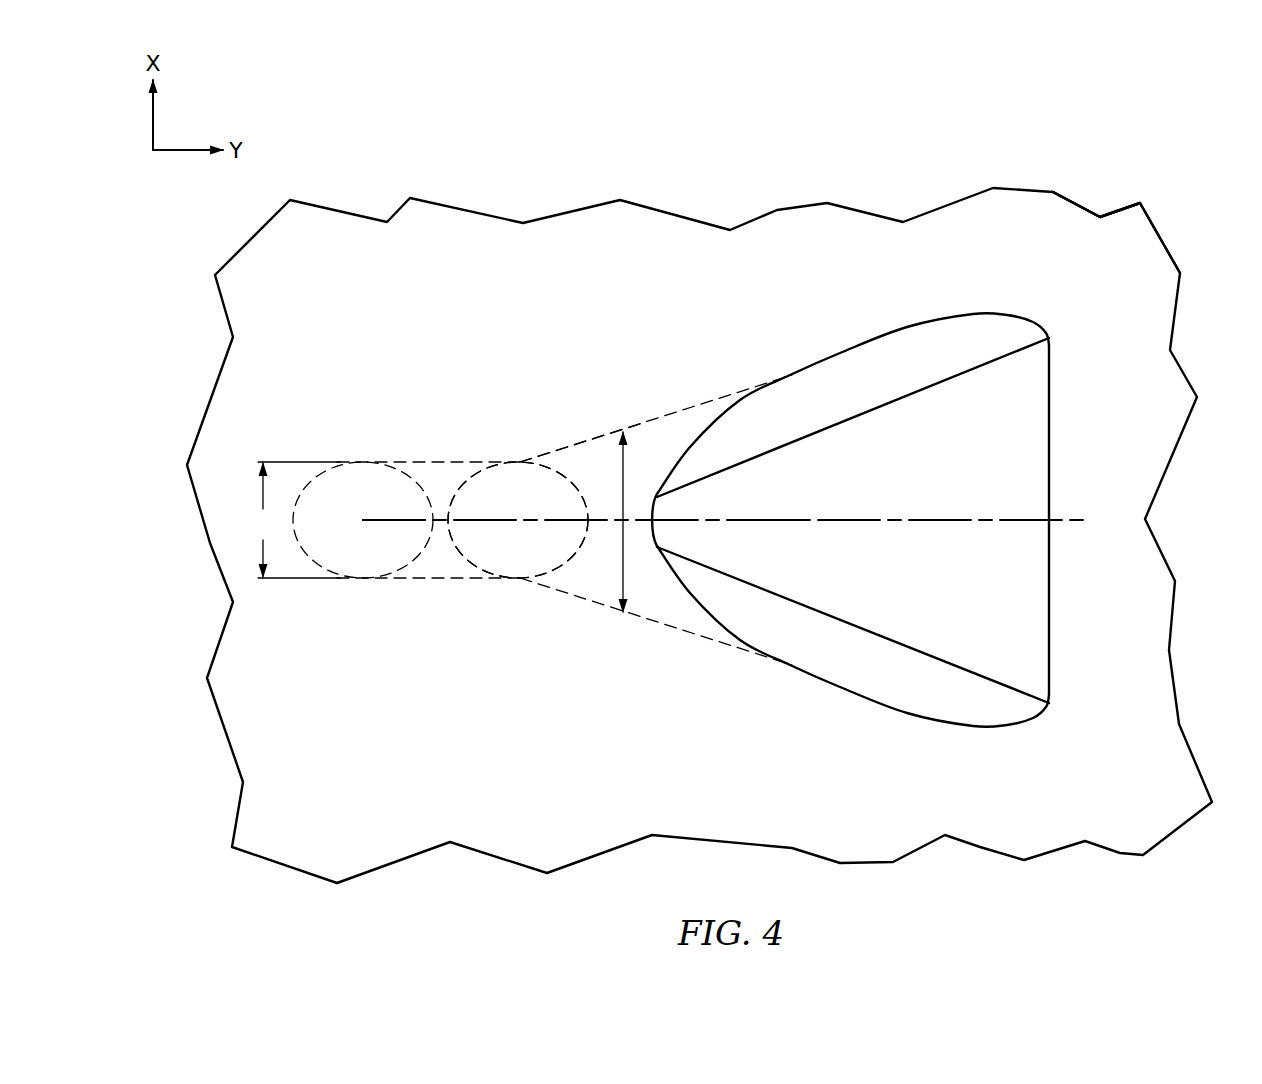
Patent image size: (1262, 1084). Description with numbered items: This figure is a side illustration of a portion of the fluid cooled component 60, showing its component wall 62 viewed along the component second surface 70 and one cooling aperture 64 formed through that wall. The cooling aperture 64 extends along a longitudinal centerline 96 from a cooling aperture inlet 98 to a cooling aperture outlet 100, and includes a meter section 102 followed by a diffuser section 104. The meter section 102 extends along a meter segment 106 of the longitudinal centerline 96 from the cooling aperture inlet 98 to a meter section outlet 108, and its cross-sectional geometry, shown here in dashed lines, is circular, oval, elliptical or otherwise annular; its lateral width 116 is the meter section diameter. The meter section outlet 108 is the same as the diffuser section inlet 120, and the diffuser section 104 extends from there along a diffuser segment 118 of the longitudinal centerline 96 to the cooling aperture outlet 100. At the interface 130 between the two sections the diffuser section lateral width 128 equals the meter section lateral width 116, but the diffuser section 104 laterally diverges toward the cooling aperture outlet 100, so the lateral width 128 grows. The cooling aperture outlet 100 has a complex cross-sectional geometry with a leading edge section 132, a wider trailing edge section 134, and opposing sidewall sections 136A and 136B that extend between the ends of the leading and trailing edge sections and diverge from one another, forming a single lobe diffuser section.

The fluid cooled component 60 is at (1190, 192).
The component wall 62 is at (1104, 213).
The cooling aperture 64 is at (1014, 378).
The component second surface 70 is at (1063, 789).
The longitudinal centerline 96 is at (1085, 524).
The cooling aperture inlet 98 is at (357, 548).
The cooling aperture outlet 100 is at (1032, 401).
The meter section 102 is at (423, 586).
The diffuser section 104 is at (727, 392).
The meter segment 106 is at (388, 520).
The meter section outlet 108 is at (511, 582).
The diffuser section inlet 120 is at (518, 520).
The meter section lateral width 116 is at (291, 520).
The diffuser segment 118 is at (878, 524).
The diffuser section lateral width 128 is at (620, 462).
The interface 130 is at (519, 458).
The leading edge section 132 is at (652, 532).
The trailing edge section 134 is at (1050, 478).
The sidewall section 136A is at (838, 690).
The sidewall section 136B is at (837, 352).